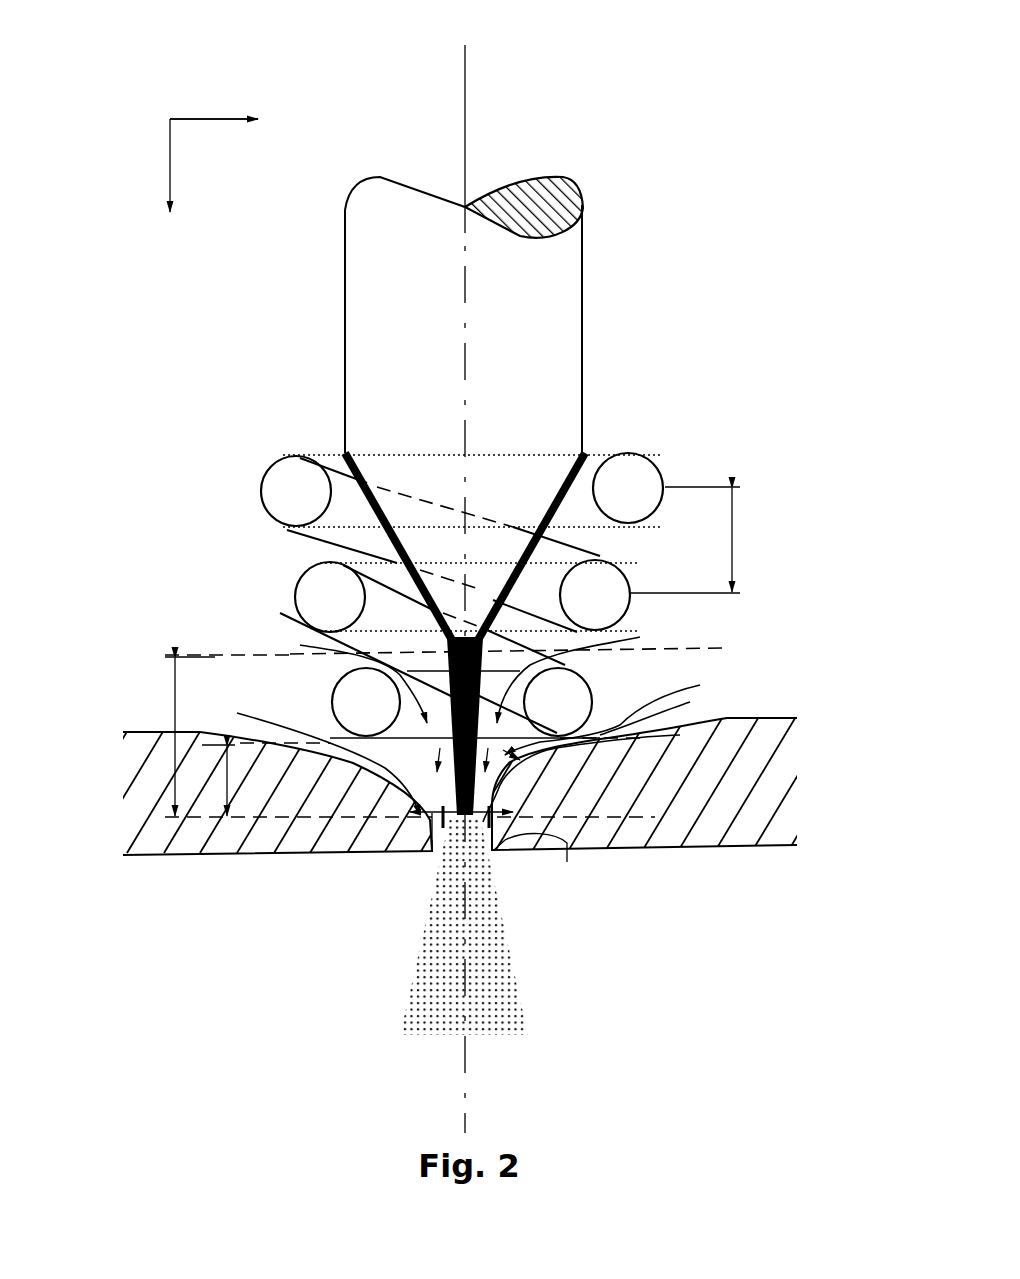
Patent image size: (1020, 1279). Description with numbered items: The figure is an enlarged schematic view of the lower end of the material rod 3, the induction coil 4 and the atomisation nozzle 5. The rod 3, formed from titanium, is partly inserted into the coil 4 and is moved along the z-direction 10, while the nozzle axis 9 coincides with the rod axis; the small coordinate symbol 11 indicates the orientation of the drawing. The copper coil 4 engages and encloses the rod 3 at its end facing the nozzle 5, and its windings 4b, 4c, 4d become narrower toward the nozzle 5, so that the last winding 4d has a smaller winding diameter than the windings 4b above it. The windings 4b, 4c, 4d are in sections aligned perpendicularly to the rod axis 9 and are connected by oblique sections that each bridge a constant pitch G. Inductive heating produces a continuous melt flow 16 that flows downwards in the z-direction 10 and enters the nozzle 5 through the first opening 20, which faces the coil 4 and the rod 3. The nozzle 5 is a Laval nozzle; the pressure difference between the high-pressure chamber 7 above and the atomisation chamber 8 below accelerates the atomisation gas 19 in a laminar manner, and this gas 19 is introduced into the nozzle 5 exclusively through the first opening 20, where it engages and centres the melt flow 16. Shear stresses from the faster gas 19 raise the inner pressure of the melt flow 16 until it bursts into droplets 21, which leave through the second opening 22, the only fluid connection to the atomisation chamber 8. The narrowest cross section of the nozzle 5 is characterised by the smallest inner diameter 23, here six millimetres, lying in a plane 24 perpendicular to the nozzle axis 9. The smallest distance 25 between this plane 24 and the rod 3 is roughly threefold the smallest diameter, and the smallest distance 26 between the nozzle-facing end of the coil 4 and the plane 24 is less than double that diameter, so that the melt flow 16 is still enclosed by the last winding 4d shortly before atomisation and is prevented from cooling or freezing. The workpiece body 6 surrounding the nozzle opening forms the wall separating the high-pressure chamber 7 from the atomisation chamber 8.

The material rod 3 is at (582, 268).
The coil 4 is at (220, 473).
The winding 4b is at (663, 468).
The winding 4c is at (613, 607).
The last winding 4d is at (600, 690).
The atomisation nozzle 5 is at (497, 858).
The workpiece 6 is at (240, 854).
The high-pressure chamber 7 is at (236, 287).
The atomisation chamber 8 is at (242, 990).
The nozzle axis 9 is at (465, 118).
The z-direction 10 is at (172, 165).
The x direction 11 is at (235, 118).
The melt flow 16 is at (360, 760).
The atomisation gas 19 is at (300, 645).
The first opening 20 is at (597, 815).
The droplets 21 is at (405, 955).
The second opening 22 is at (428, 858).
The smallest inner diameter 23 is at (539, 860).
The plane 24 is at (560, 762).
The smallest distance 25 is at (190, 770).
The smallest distance a_min 26 is at (253, 817).
The pitch G is at (685, 540).